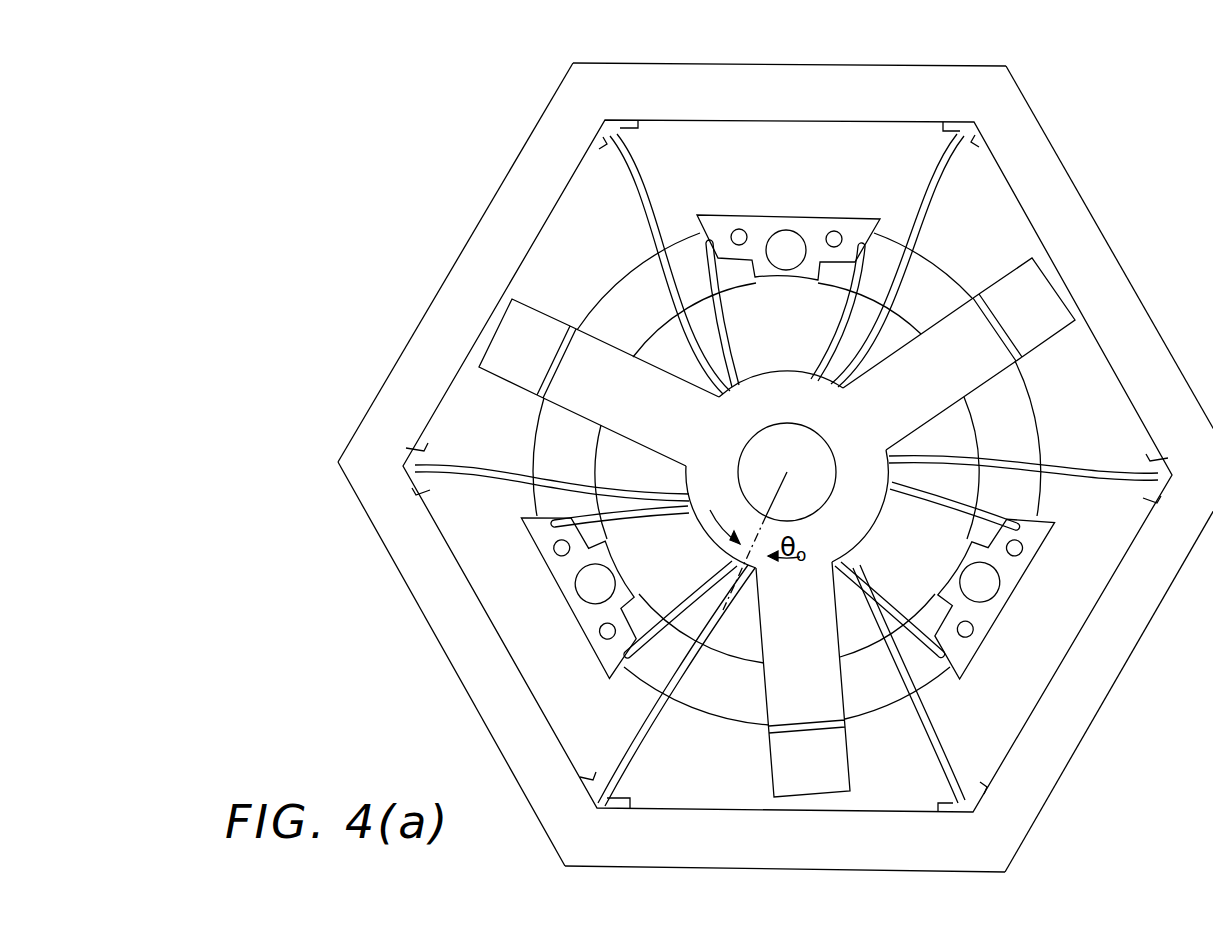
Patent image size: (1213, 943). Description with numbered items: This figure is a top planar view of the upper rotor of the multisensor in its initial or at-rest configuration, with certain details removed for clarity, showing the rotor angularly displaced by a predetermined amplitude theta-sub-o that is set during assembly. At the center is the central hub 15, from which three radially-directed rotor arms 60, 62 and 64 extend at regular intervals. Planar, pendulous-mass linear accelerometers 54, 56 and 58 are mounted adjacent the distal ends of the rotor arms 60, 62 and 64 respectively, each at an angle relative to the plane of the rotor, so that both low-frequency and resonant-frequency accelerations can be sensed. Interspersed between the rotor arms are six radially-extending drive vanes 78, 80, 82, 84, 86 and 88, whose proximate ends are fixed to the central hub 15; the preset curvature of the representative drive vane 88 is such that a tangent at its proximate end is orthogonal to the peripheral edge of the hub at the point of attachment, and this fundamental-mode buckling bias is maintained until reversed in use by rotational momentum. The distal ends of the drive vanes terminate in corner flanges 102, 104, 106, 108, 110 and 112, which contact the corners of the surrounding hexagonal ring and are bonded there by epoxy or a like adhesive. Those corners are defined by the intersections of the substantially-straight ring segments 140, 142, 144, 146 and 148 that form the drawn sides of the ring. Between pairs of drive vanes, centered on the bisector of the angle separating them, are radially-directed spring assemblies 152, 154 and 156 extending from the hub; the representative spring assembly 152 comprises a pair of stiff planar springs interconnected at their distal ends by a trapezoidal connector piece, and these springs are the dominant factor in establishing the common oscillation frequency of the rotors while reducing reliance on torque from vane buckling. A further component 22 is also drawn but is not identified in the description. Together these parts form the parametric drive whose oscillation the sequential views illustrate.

The ring segment 144 is at (850, 63).
The ring segment 142 is at (1083, 200).
The ring segment 140 is at (1116, 680).
The ring segment 148 is at (455, 672).
The ring segment 146 is at (503, 187).
The corner flange 108 is at (636, 132).
The corner flange 106 is at (968, 147).
The corner flange 104 is at (1152, 462).
The corner flange 102 is at (953, 799).
The corner flange 112 is at (589, 775).
The corner flange 110 is at (428, 448).
The drive vane 84 is at (658, 212).
The drive vane 82 is at (925, 212).
The drive vane 80 is at (1057, 468).
The drive vane 78 is at (936, 735).
The drive vane 88 is at (665, 722).
The drive vane 86 is at (487, 485).
The spring assembly 154 is at (797, 214).
The spring assembly 156 is at (547, 592).
The spring assembly 152 is at (1005, 636).
The leaf spring 22 is at (1030, 497).
The central hub 15 is at (770, 370).
The rotor arm 60 is at (790, 697).
The accelerometer 54 is at (832, 767).
The rotor arm 64 is at (600, 362).
The accelerometer 56 is at (517, 370).
The rotor arm 62 is at (932, 352).
The accelerometer 58 is at (1034, 320).